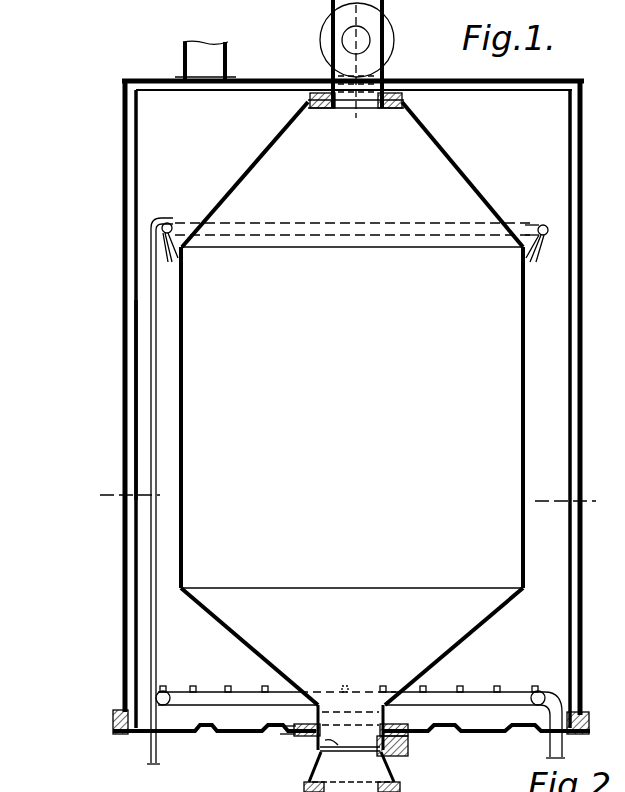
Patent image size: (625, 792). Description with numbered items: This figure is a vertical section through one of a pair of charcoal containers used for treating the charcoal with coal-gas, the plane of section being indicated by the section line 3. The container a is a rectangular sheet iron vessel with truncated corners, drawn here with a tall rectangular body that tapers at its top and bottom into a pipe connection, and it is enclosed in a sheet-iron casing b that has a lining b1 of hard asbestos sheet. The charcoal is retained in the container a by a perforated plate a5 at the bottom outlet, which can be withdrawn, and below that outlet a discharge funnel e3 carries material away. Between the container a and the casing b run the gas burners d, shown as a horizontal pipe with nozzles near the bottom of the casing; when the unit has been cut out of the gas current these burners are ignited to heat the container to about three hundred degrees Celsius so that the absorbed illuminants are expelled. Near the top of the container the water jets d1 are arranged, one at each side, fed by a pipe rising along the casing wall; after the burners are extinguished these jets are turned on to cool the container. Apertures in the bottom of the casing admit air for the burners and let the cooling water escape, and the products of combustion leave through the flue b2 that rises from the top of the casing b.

The container a is at (352, 429).
The perforated plate a5 is at (320, 748).
The casing b is at (580, 387).
The lining b1 is at (140, 156).
The flue b2 is at (215, 53).
The gas burners d is at (262, 690).
The water jets d1 is at (176, 240).
The discharge funnel e3 is at (393, 791).
The section line 3 is at (343, 501).